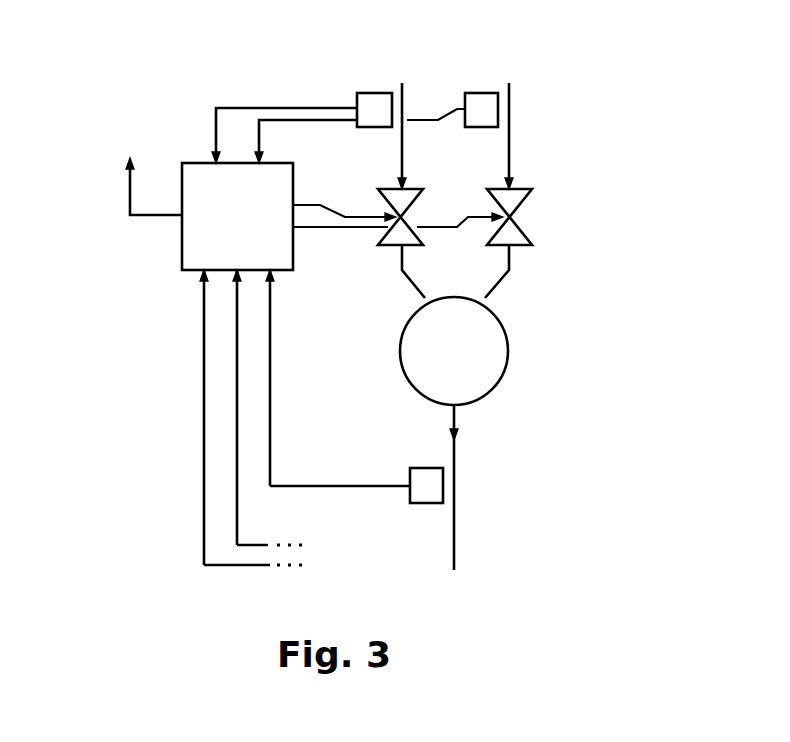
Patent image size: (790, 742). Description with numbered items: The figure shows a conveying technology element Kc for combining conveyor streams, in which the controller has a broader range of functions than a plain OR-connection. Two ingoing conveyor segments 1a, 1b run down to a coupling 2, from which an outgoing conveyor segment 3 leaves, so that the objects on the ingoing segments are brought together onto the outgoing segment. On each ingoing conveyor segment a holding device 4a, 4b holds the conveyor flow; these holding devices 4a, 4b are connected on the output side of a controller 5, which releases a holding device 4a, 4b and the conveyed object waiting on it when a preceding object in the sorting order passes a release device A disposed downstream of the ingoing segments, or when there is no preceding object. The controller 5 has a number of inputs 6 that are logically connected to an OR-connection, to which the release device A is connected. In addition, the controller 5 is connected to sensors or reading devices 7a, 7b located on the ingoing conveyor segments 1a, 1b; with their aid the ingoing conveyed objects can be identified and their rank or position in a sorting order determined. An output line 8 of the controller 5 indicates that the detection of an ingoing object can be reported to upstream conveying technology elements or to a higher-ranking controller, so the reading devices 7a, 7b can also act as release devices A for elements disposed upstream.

The ingoing conveyor segment 1a is at (398, 90).
The ingoing conveyor segment 1b is at (512, 90).
The coupling 2 is at (472, 416).
The outgoing conveyor segment 3 is at (457, 453).
The holding device 4a is at (396, 237).
The holding device 4b is at (513, 237).
The controller 5 is at (198, 172).
The inputs 6 is at (182, 282).
The sensor or reading device 7a is at (377, 105).
The sensor or reading device 7b is at (482, 105).
The output line 8 is at (125, 204).
The release device A is at (418, 492).
The conveying technology element Kc is at (617, 137).